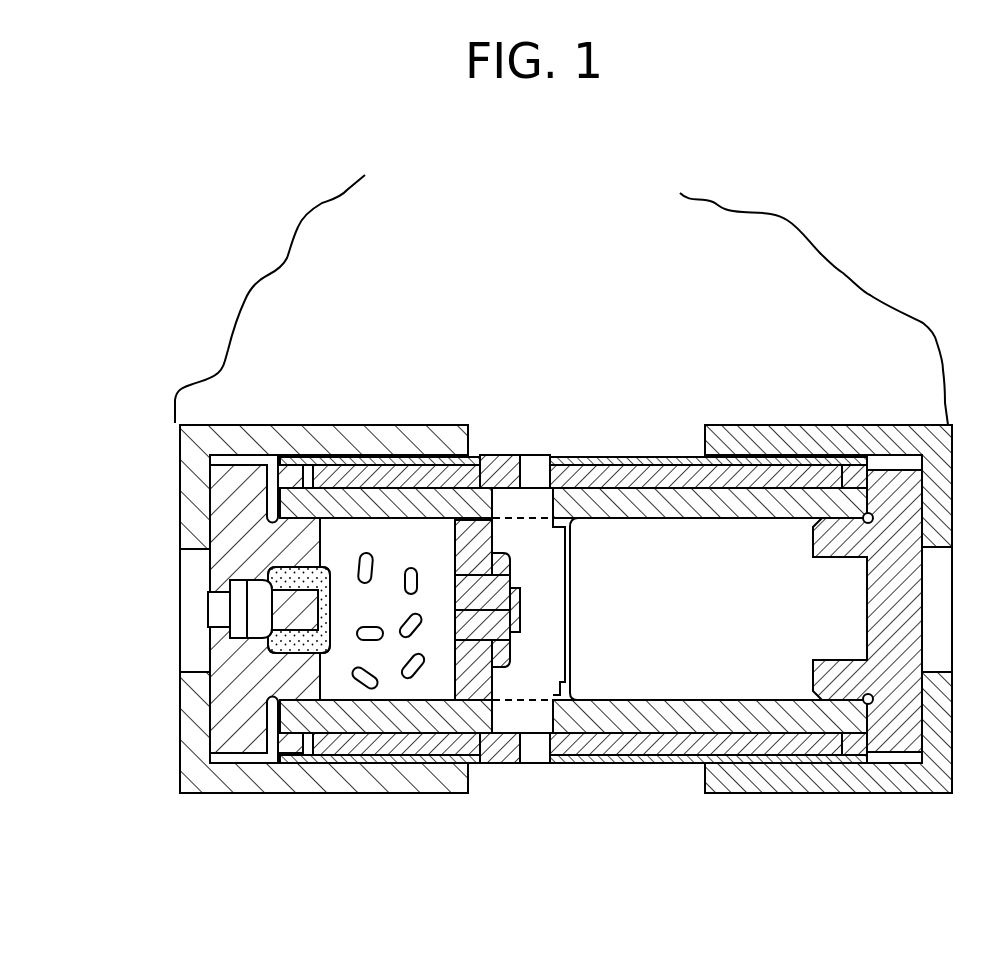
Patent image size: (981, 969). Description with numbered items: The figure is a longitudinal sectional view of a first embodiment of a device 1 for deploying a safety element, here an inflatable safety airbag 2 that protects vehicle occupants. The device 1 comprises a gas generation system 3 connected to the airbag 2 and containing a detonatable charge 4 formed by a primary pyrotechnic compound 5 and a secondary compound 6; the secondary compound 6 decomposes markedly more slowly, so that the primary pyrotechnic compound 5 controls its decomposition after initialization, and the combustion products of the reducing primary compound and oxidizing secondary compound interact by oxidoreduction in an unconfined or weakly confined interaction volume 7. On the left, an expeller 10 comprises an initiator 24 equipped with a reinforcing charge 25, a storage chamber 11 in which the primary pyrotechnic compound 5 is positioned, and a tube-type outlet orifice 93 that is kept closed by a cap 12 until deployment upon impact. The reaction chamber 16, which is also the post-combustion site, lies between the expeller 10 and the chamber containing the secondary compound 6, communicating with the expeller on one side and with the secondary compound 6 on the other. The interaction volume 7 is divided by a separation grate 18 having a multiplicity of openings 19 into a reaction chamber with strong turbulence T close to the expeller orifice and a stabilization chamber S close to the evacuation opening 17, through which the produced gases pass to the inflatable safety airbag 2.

The device 1 is at (590, 232).
The inflatable safety airbag 2 is at (872, 297).
The gas generation system 3 is at (388, 400).
The detonatable charge 4 is at (188, 857).
The primary pyrotechnic compound 5 is at (362, 680).
The secondary compound 6 is at (663, 680).
The interaction volume 7 is at (577, 700).
The expeller 10 is at (473, 507).
The storage chamber 11 is at (397, 685).
The cap 12 is at (497, 653).
The reaction chamber 16 is at (524, 609).
The evacuation opening 17 is at (547, 683).
The separation grate 18 is at (550, 518).
The openings 19 is at (537, 515).
The initiator 24 is at (220, 603).
The reinforcing charge 25 is at (290, 642).
The outlet orifice 93 is at (457, 607).
The stabilization chamber S is at (513, 500).
The reaction chamber with strong turbulence T is at (540, 753).